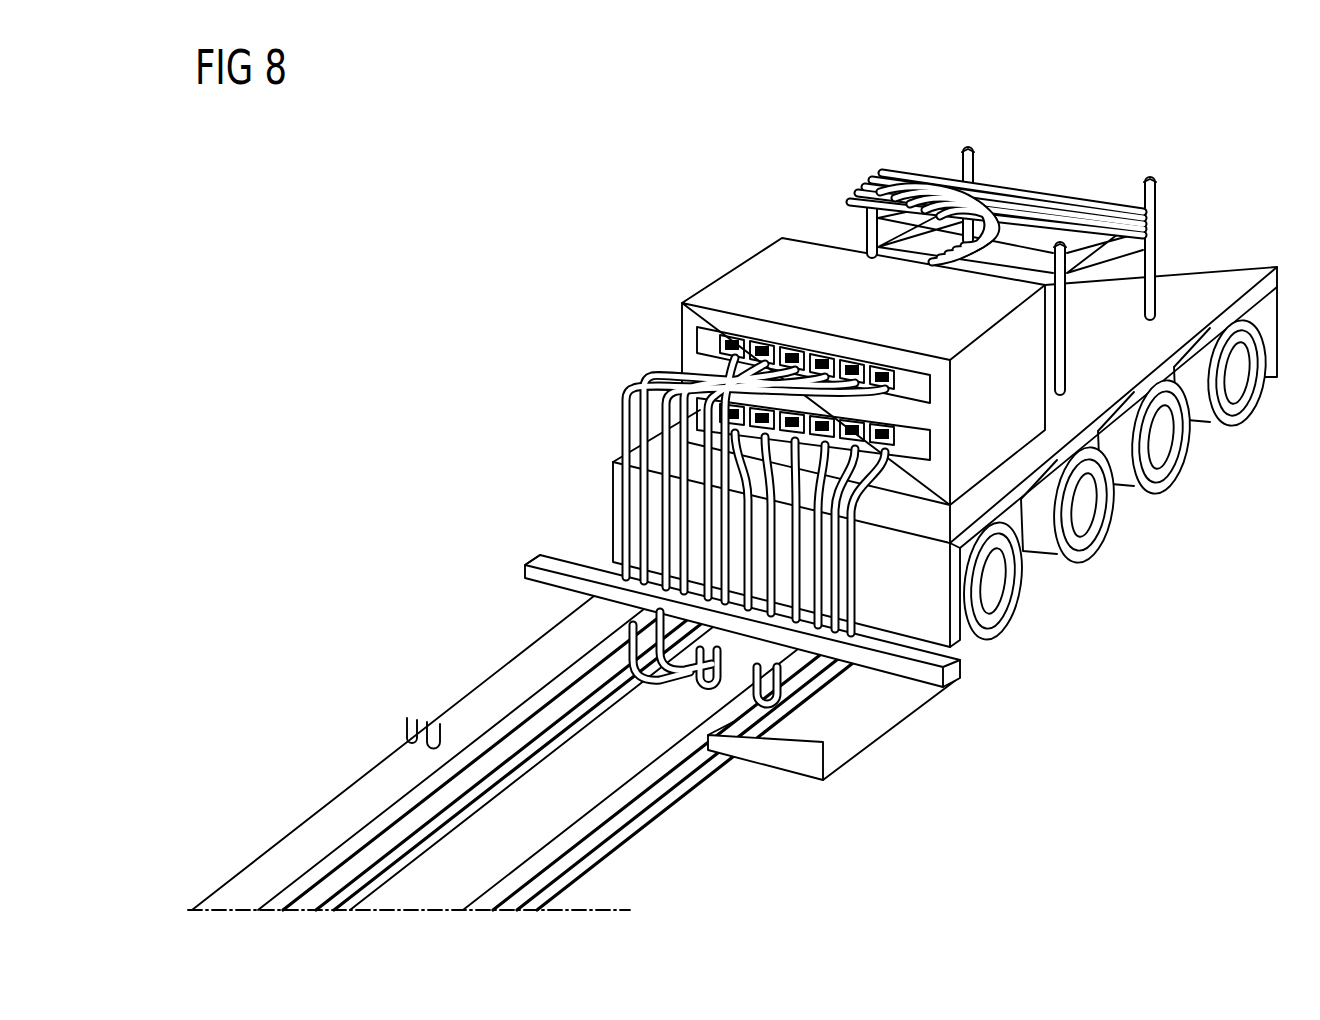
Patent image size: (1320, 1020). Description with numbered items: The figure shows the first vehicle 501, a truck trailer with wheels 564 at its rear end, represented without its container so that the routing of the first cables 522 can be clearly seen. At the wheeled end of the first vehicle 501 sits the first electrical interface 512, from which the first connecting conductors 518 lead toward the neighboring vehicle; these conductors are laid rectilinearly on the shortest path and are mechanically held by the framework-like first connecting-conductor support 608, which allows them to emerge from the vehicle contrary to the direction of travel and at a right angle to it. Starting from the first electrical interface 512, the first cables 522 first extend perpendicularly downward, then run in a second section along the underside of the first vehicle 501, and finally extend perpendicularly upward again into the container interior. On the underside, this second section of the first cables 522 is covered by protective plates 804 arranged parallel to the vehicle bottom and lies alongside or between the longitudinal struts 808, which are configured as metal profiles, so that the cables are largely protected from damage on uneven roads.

The first vehicle 501 is at (1148, 137).
The first electrical interface 512 is at (738, 282).
The first connecting conductors 518 is at (900, 178).
The first cables 522 is at (622, 420).
The wheels 564 is at (1085, 508).
The first connecting-conductor support 608 is at (1070, 195).
The protective plates 804 is at (440, 882).
The longitudinal struts 808 is at (505, 725).